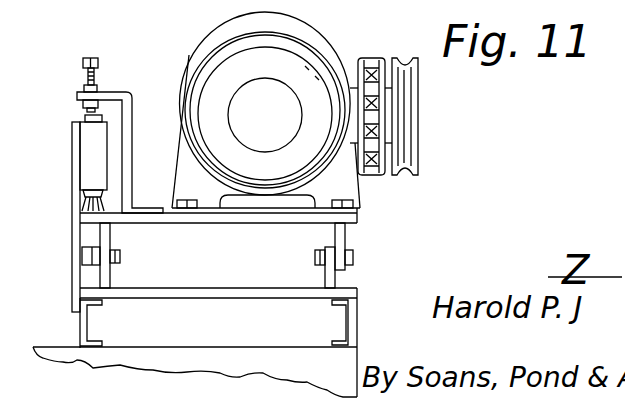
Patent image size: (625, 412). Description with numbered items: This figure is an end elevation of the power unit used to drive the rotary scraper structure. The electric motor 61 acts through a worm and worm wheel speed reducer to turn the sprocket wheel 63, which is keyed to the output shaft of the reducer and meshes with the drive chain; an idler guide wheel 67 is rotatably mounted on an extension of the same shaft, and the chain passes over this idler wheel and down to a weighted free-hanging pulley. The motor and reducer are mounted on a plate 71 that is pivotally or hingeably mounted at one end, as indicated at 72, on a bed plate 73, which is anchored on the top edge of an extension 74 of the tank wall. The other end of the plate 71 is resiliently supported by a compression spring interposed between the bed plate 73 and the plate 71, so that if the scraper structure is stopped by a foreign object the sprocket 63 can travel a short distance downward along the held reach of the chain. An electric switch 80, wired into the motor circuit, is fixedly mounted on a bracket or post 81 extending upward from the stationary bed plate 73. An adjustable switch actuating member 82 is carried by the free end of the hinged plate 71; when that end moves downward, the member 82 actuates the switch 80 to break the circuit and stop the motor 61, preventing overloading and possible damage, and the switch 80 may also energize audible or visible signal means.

The electric motor 61 is at (299, 62).
The sprocket wheel 63 is at (360, 58).
The idler guide wheel 67 is at (411, 102).
The plate 71 is at (186, 223).
The pivotal mounting 72 is at (112, 278).
The bed plate 73 is at (205, 289).
The extension 74 is at (262, 362).
The electric switch 80 is at (88, 149).
The bracket or post 81 is at (75, 214).
The adjustable switch actuating member 82 is at (127, 119).